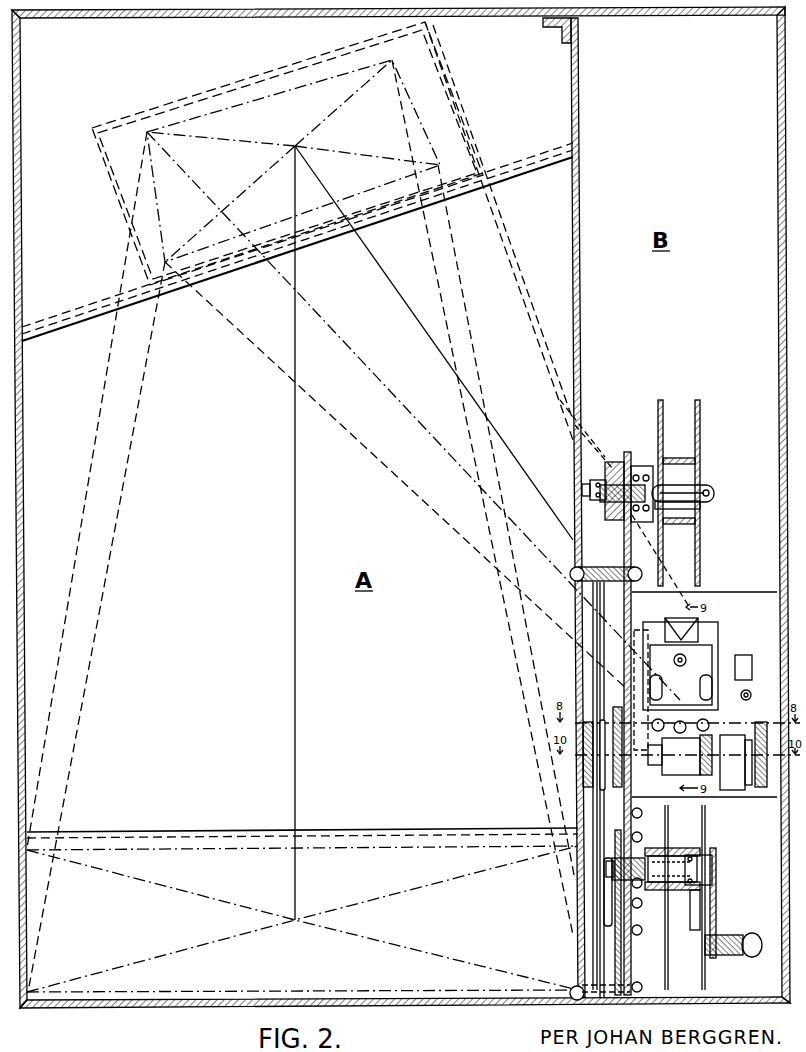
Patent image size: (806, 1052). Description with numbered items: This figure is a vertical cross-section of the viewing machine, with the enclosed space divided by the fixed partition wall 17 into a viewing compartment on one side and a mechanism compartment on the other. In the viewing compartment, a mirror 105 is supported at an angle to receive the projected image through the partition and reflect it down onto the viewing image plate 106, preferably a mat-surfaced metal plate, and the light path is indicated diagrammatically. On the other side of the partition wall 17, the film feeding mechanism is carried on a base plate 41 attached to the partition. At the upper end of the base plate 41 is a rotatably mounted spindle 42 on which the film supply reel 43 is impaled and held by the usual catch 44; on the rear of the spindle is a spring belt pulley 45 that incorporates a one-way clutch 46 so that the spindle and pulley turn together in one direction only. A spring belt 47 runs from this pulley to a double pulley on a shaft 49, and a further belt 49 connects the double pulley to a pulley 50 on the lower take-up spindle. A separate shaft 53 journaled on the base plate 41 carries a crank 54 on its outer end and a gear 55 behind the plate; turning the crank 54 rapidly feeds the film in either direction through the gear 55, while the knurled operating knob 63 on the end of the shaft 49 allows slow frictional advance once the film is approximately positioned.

The partition wall 17 is at (578, 288).
The base plate 41 is at (578, 566).
The spindle 42 is at (712, 488).
The film supply reel 43 is at (702, 436).
The catch 44 is at (690, 506).
The spring belt pulley 45 is at (610, 462).
The one-way clutch 46 is at (578, 500).
The belt 47 is at (603, 620).
The shaft 49 is at (598, 856).
The pulley 50 is at (610, 928).
The shaft 53 is at (676, 854).
The crank 54 is at (716, 908).
The gear 55 is at (619, 962).
The knurled operating knob 63 is at (583, 780).
The mirror 105 is at (132, 226).
The viewing image plate 106 is at (368, 892).